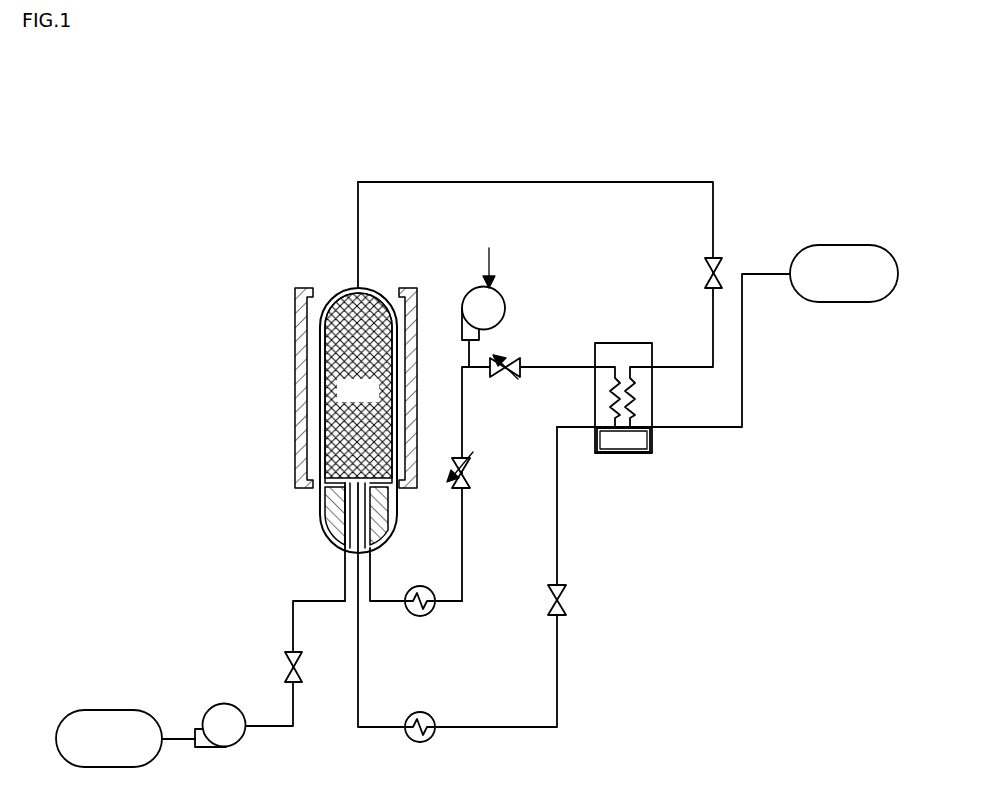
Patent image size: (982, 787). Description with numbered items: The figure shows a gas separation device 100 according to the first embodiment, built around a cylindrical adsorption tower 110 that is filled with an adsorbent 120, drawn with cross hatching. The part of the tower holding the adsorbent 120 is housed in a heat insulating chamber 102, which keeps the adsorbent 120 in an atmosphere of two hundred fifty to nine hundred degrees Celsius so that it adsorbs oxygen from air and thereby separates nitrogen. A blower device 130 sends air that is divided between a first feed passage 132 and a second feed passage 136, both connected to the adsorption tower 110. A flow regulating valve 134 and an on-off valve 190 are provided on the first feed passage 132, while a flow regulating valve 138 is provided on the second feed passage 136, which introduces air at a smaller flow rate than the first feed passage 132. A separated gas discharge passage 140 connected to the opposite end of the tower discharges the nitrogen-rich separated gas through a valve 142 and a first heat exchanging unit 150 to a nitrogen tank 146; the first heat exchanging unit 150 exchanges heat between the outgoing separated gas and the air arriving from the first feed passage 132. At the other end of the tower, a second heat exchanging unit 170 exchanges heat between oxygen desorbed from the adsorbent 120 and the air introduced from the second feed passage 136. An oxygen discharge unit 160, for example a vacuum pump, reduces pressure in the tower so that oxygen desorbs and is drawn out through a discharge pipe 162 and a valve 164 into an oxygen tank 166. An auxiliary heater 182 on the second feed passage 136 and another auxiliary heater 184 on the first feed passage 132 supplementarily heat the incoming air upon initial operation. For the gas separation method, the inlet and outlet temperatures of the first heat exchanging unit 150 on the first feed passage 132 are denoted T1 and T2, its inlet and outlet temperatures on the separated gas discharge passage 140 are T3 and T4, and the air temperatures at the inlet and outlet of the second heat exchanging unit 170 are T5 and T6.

The gas separation device 100 is at (228, 124).
The heat insulating chamber 102 is at (296, 363).
The adsorption tower 110 is at (391, 295).
The adsorbent 120 is at (377, 401).
The blower device 130 is at (505, 309).
The first feed passage 132 is at (545, 370).
The valve 134 is at (510, 358).
The second feed passage 136 is at (447, 604).
The valve 138 is at (470, 457).
The separated gas discharge passage 140 is at (503, 181).
The valve 142 is at (705, 261).
The nitrogen tank 146 is at (863, 285).
The first heat exchanging unit 150 is at (622, 342).
The oxygen discharge unit 160 is at (228, 709).
The discharge pipe 162 is at (312, 598).
The valve 164 is at (284, 655).
The oxygen tank 166 is at (128, 750).
The second heat exchanging unit 170 is at (386, 507).
The auxiliary heater 182 is at (419, 584).
The auxiliary heater 184 is at (420, 712).
The valve 190 is at (565, 589).
The inlet temperature of the first heat exchanging unit on the first feed passage T1 is at (595, 367).
The outlet temperature of the first heat exchanging unit on the first feed passage T2 is at (595, 428).
The inlet temperature of the first heat exchanging unit on the separated gas dischar T3 is at (652, 367).
The outlet temperature of the first heat exchanging unit on the separated gas discha T4 is at (652, 428).
The inlet temperature of the second heat exchanging unit T5 is at (326, 540).
The outlet temperature of the second heat exchanging unit T6 is at (327, 490).